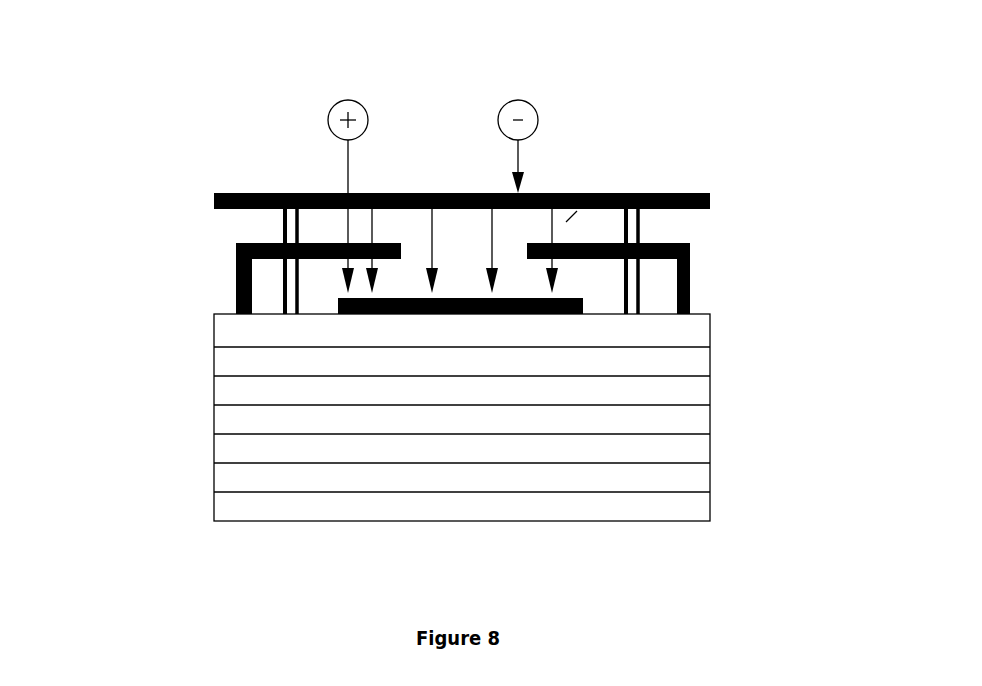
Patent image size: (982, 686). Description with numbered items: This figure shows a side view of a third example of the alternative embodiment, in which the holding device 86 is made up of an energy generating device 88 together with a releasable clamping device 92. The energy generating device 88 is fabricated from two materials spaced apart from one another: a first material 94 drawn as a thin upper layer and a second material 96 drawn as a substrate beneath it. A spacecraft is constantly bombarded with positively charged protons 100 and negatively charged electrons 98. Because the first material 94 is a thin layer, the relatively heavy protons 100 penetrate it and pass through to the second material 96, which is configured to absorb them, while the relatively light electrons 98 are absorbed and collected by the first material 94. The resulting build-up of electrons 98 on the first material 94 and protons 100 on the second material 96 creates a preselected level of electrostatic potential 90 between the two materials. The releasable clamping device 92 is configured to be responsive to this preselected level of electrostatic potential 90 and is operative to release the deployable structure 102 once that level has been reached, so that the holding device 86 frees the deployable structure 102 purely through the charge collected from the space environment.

The holding device 86 is at (108, 127).
The energy generating device 88 is at (917, 207).
The electrostatic potential 90 is at (590, 193).
The releasable clamping device 92 is at (690, 252).
The first material 94 is at (712, 196).
The second material 96 is at (283, 226).
The electrons 98 is at (522, 98).
The protons 100 is at (353, 98).
The deployable structure 102 is at (692, 415).